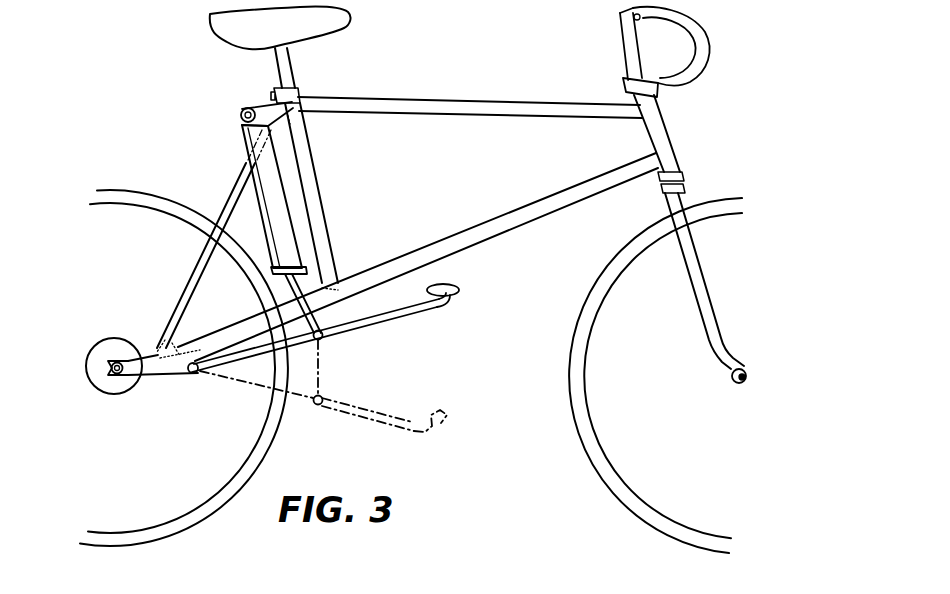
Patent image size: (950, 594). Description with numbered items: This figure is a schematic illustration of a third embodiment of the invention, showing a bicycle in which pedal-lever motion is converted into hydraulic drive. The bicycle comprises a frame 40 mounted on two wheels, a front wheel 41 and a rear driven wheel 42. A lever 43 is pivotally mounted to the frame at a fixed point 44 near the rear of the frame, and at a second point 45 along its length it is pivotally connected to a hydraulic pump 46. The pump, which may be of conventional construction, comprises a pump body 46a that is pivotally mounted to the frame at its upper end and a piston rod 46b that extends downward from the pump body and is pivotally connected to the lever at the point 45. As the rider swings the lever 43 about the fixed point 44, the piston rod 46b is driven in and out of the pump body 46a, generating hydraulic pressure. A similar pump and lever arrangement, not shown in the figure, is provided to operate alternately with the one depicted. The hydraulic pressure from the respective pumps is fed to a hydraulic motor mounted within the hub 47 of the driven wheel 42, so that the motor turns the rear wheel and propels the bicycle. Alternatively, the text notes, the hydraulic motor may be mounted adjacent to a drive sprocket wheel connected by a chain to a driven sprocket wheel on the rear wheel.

The frame 40 is at (511, 100).
The wheel 41 is at (578, 432).
The driven wheel 42 is at (112, 194).
The lever 43 is at (372, 408).
The fixed point 44 is at (190, 380).
The point 45 is at (322, 339).
The hydraulic pump 46 is at (293, 217).
The pump body 46a is at (264, 176).
The piston rod 46b is at (322, 289).
The hub 47 is at (113, 394).